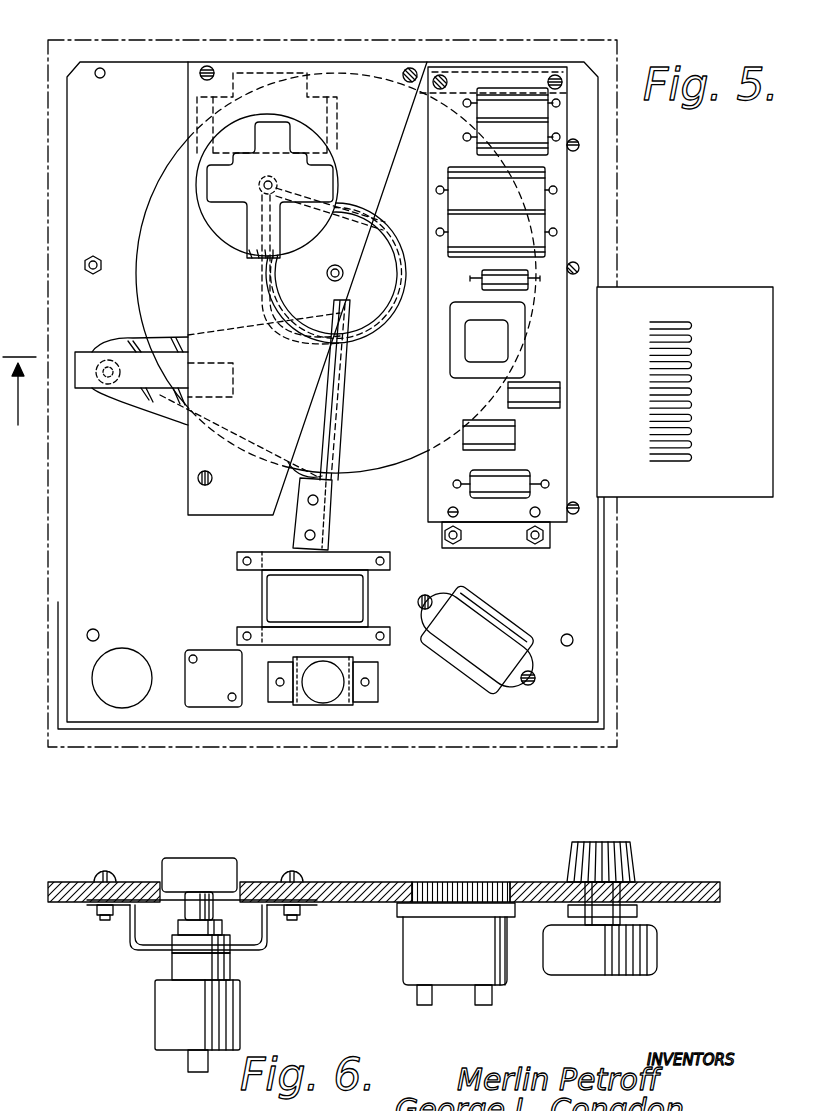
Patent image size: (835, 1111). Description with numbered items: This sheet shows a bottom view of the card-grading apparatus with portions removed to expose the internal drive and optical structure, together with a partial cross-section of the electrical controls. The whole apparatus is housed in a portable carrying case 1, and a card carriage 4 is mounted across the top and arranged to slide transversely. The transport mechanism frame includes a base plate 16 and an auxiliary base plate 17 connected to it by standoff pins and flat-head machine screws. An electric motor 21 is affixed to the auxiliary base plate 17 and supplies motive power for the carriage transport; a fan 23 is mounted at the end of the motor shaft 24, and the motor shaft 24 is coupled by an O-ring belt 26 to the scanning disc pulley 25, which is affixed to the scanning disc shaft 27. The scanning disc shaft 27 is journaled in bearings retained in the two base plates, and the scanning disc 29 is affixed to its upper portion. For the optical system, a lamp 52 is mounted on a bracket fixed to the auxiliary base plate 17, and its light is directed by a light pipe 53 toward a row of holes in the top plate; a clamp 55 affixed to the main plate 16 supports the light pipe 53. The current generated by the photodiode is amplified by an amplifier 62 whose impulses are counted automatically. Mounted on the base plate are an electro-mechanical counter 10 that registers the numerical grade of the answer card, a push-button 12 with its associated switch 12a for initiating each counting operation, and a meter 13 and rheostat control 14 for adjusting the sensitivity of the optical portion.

In FIG. 5, the portable carrying case 1 is at (613, 638).
In FIG. 5, the card carriage 4 is at (623, 396).
In FIG. 5, the electro-mechanical counter 10 is at (332, 609).
In FIG. 6, the push-button 12 is at (222, 866).
In FIG. 5, the switch 12a is at (340, 693).
In FIG. 6, the switch 12a is at (227, 1007).
In FIG. 5, the meter 13 is at (226, 689).
In FIG. 6, the meter 13 is at (452, 962).
In FIG. 5, the rheostat control 14 is at (137, 690).
In FIG. 6, the rheostat control 14 is at (596, 962).
In FIG. 5, the base plate 16 is at (77, 572).
In FIG. 5, the auxiliary base plate 17 is at (197, 502).
In FIG. 5, the electric motor 21 is at (207, 112).
In FIG. 5, the fan 23 is at (252, 232).
In FIG. 5, the motor shaft 24 is at (276, 181).
In FIG. 5, the scanning disc pulley 25 is at (373, 300).
In FIG. 5, the O-ring belt 26 is at (388, 222).
In FIG. 5, the scanning disc shaft 27 is at (327, 273).
In FIG. 5, the scanning disc 29 is at (150, 201).
In FIG. 5, the lamp 52 is at (123, 336).
In FIG. 5, the light pipe 53 is at (163, 405).
In FIG. 5, the clamp 55 is at (340, 494).
In FIG. 5, the amplifier 62 is at (510, 530).